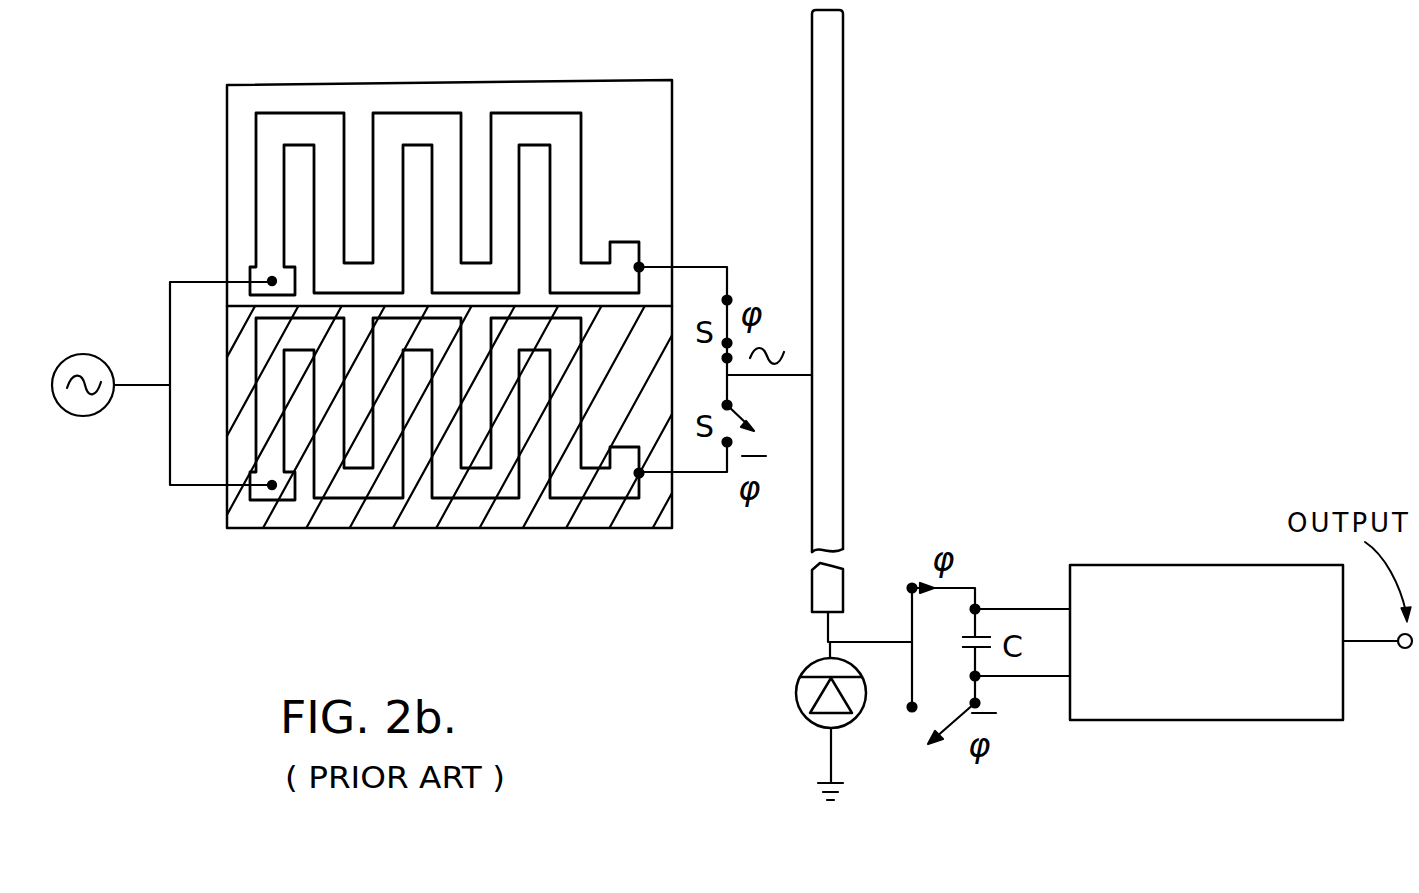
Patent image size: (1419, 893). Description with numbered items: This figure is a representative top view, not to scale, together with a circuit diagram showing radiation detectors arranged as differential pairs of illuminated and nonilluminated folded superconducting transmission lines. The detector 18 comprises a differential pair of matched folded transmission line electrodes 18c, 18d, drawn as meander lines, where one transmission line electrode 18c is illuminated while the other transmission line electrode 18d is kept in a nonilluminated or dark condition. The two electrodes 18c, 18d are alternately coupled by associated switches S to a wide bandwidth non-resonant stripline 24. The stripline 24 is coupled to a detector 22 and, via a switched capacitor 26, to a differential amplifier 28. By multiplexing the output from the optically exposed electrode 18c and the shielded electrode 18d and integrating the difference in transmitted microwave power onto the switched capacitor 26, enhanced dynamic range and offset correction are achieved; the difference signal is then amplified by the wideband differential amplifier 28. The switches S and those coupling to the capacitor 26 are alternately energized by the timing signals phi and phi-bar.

The detector 18 is at (693, 68).
The transmission line electrode 18c is at (254, 188).
The transmission line electrode 18d is at (250, 438).
The detector 22 is at (795, 698).
The stripline 24 is at (845, 328).
The switched capacitor 26 is at (980, 640).
The differential amplifier 28 is at (1128, 564).